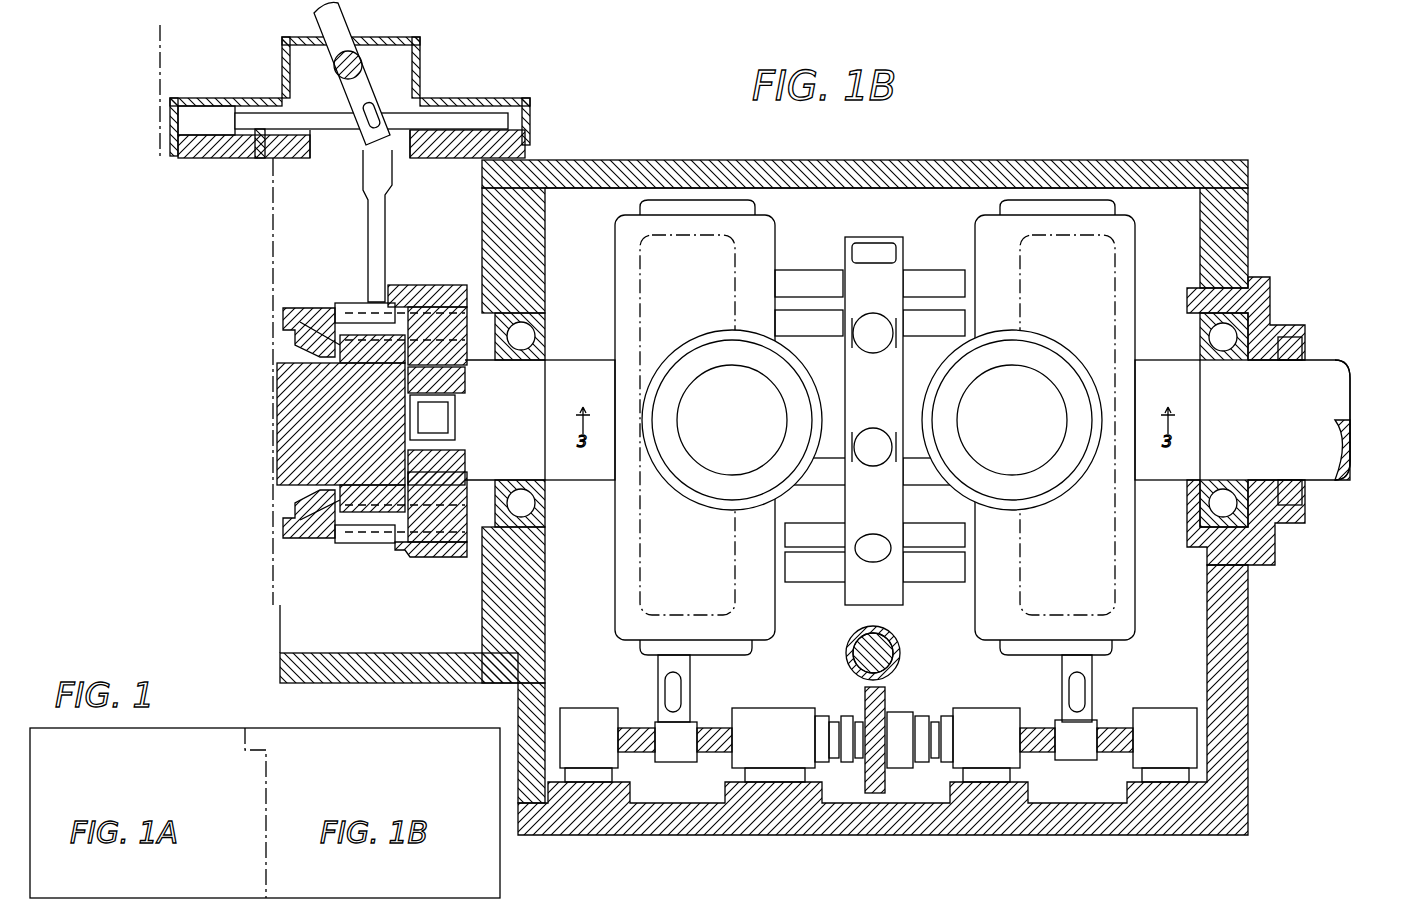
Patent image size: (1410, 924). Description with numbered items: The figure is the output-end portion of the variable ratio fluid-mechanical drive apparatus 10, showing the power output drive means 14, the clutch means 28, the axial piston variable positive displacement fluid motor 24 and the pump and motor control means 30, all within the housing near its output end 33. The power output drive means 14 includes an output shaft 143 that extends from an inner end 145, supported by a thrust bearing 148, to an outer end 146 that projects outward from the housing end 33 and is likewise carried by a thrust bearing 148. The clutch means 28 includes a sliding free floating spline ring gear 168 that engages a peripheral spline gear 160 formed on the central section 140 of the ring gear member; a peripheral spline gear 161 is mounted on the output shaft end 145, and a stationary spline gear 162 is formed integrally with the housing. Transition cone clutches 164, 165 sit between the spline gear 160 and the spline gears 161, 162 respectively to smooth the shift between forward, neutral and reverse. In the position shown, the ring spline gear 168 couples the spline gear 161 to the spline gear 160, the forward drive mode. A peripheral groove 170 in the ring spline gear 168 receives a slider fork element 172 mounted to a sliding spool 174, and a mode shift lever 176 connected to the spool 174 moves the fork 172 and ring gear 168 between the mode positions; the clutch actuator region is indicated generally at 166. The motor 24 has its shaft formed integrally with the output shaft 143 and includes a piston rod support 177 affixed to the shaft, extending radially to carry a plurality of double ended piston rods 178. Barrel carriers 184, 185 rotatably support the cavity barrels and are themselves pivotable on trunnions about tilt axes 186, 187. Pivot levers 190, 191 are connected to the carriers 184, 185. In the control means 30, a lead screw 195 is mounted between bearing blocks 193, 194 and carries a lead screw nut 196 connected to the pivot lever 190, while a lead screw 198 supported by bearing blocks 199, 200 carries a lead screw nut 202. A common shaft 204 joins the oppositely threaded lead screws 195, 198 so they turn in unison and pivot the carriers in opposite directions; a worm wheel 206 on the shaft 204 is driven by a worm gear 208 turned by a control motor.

The variable ratio fluid-mechanical drive apparatus 10 is at (1259, 159).
The power output drive means 14 is at (1330, 357).
The axial piston, variable positive displacement fluid motor 24 is at (740, 645).
The clutch means 28 is at (316, 561).
The pump and motor control means 30 is at (1122, 687).
The output end 33 is at (1272, 548).
The central section 140 is at (278, 424).
The output shaft 143 is at (1299, 420).
The inner end 145 is at (467, 390).
The outer end 146 is at (1340, 414).
The thrust bearing 148 is at (545, 330).
The peripheral spline gear 160 is at (343, 299).
The peripheral spline gear 161 is at (468, 478).
The stationary spline gear 162 is at (275, 332).
The transition cone clutch 164 is at (308, 297).
The transition cone clutch 165 is at (437, 295).
The clutch actuator 166 is at (404, 250).
The sliding free floating spline ring gear 168 is at (400, 300).
The peripheral groove 170 is at (372, 559).
The slider fork element 172 is at (387, 217).
The sliding spool 174 is at (350, 133).
The mode shift lever 176 is at (350, 22).
The piston rod support 177 is at (898, 265).
The double ended piston rods 178 is at (822, 340).
The barrel carrier 184 is at (618, 597).
The barrel carrier 185 is at (1132, 600).
The tilt axis 186 is at (735, 420).
The tilt axis 187 is at (1013, 420).
The pivot lever 190 is at (683, 672).
The pivot lever 191 is at (1088, 668).
The bearing block 193 is at (578, 708).
The bearing block 194 is at (760, 708).
The lead screw 195 is at (631, 762).
The lead screw nut 196 is at (676, 742).
The lead screw 198 is at (1031, 762).
The bearing block 199 is at (986, 745).
The bearing block 200 is at (1165, 745).
The lead screw nut 202 is at (1076, 740).
The common shaft 204 is at (931, 708).
The worm wheel 206 is at (885, 778).
The worm gear 208 is at (900, 660).